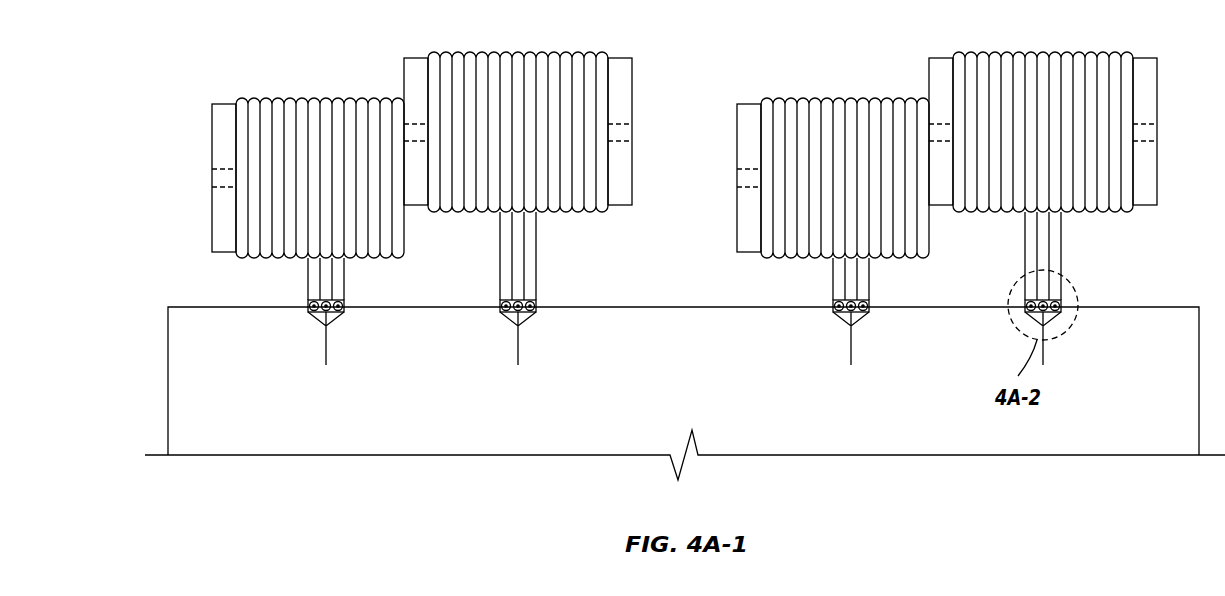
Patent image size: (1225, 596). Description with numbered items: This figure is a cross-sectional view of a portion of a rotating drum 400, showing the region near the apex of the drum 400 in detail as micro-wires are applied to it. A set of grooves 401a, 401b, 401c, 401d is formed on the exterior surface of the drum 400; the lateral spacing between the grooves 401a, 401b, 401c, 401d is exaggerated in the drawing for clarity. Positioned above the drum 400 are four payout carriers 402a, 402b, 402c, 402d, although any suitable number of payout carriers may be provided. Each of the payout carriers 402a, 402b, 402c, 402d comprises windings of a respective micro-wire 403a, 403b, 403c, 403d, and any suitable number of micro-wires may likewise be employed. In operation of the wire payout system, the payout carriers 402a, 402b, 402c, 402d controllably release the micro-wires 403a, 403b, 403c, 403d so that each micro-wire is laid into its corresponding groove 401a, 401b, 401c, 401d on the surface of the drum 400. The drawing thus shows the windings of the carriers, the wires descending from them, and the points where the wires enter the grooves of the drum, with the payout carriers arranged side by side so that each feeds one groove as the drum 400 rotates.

The drum 400 is at (703, 388).
The groove 401a is at (340, 329).
The groove 401b is at (532, 329).
The groove 401c is at (865, 329).
The groove 401d is at (1057, 329).
The payout carrier 402a is at (328, 98).
The payout carrier 402b is at (518, 52).
The payout carrier 402c is at (853, 98).
The payout carrier 402d is at (1043, 52).
The micro-wire 403a is at (346, 267).
The micro-wire 403b is at (537, 243).
The micro-wire 403c is at (871, 267).
The micro-wire 403d is at (1062, 243).